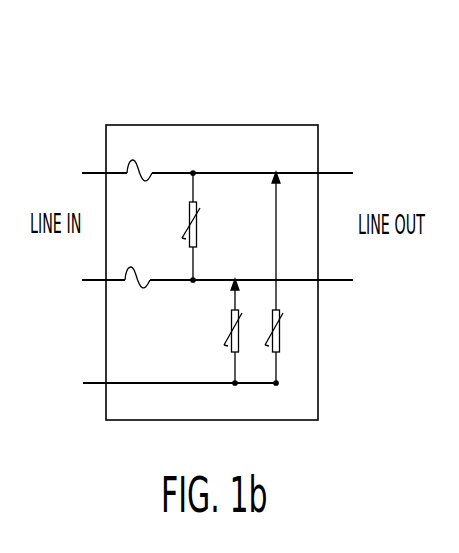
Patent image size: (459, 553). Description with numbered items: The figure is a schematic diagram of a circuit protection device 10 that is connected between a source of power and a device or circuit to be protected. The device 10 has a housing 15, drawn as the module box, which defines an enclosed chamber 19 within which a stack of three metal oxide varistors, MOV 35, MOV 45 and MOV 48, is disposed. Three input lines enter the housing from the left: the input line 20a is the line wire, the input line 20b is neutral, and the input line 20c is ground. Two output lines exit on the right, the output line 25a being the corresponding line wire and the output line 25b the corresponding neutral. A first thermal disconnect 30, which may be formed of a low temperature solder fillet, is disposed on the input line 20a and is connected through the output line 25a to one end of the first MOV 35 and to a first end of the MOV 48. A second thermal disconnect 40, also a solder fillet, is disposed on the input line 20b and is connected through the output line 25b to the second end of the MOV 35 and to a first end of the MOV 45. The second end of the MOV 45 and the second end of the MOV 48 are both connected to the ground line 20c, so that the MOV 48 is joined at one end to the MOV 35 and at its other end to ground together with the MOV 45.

The circuit protection device 10 is at (121, 86).
The housing 15 is at (305, 125).
The enclosed chamber 19 is at (263, 148).
The input line 20a is at (94, 172).
The input line 20b is at (90, 283).
The input line 20c is at (96, 385).
The output line 25a is at (334, 172).
The output line 25b is at (333, 283).
The first thermal disconnect 30 is at (147, 147).
The first MOV 35 is at (186, 223).
The second thermal disconnect 40 is at (140, 294).
The MOV 45 is at (245, 350).
The MOV 48 is at (287, 356).